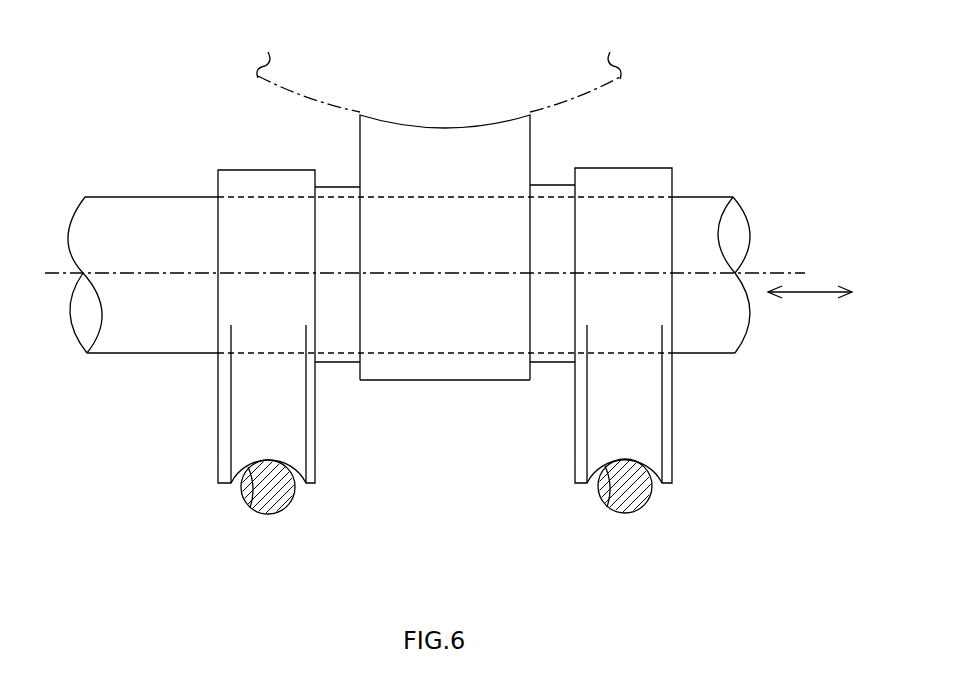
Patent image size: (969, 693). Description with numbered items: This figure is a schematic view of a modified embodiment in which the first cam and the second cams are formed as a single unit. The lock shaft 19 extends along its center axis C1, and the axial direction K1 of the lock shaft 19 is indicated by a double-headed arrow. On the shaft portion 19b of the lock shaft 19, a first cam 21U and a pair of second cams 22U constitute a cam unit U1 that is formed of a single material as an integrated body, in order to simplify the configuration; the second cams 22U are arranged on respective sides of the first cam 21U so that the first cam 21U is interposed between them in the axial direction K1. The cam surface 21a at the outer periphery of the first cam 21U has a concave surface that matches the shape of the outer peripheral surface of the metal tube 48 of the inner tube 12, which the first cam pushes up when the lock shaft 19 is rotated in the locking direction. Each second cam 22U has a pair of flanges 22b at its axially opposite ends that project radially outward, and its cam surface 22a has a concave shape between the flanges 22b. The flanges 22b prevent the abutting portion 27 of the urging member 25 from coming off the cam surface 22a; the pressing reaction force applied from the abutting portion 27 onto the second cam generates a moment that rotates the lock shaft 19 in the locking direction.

The lock shaft 19 is at (140, 197).
The shaft portion 19b is at (108, 350).
The cam surface 21a is at (445, 127).
The first cam 21U is at (448, 382).
The metal tube 48 is at (548, 114).
The inner tube 12 is at (597, 86).
The center axis C1 is at (778, 272).
The axial direction K1 is at (808, 296).
The cam unit U1 is at (246, 157).
The second cams 22U is at (218, 444).
The flanges 22b is at (220, 385).
The cam surface 22a is at (251, 506).
The abutting portion 27 is at (278, 497).
The urging member 25 is at (647, 503).